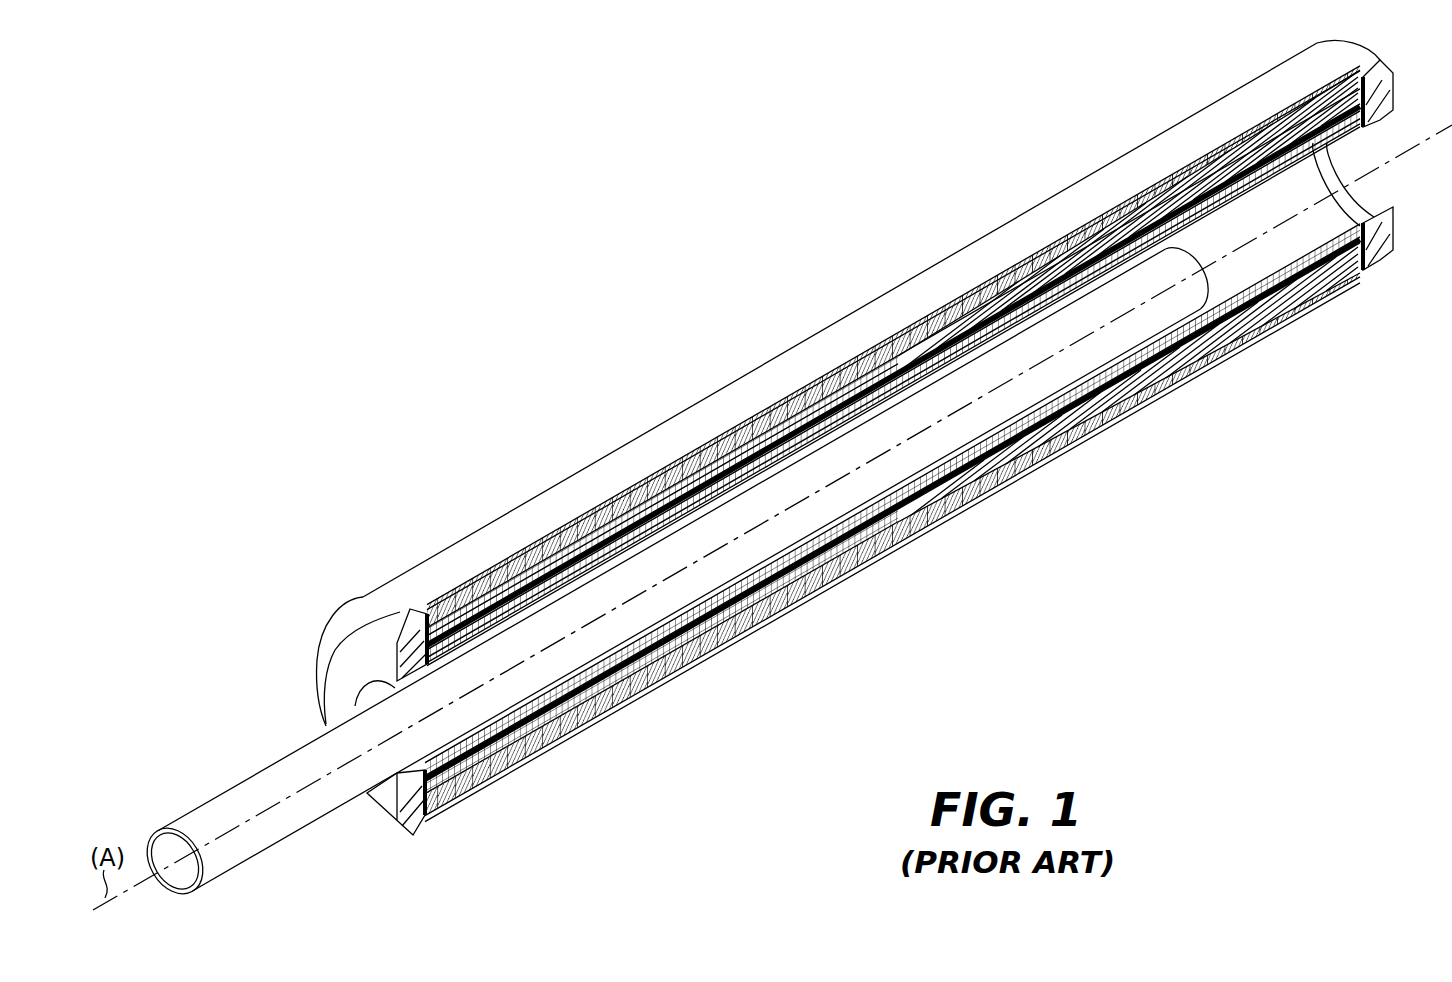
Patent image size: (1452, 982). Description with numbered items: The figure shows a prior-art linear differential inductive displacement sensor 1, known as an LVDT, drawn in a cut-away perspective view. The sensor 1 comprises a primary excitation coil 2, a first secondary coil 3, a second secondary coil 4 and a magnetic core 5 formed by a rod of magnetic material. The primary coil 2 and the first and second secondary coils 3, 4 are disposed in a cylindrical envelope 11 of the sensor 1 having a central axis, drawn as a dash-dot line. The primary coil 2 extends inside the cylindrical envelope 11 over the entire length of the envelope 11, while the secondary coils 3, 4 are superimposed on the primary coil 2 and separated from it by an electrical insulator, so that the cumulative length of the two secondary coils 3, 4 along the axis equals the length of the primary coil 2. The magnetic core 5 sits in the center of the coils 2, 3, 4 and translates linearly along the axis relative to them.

The linear differential inductive displacement sensor 1 is at (494, 296).
The primary excitation coil 2 is at (788, 612).
The first secondary coil 3 is at (650, 498).
The second secondary coil 4 is at (1089, 254).
The magnetic core 5 is at (258, 772).
The cylindrical envelope 11 is at (1250, 84).